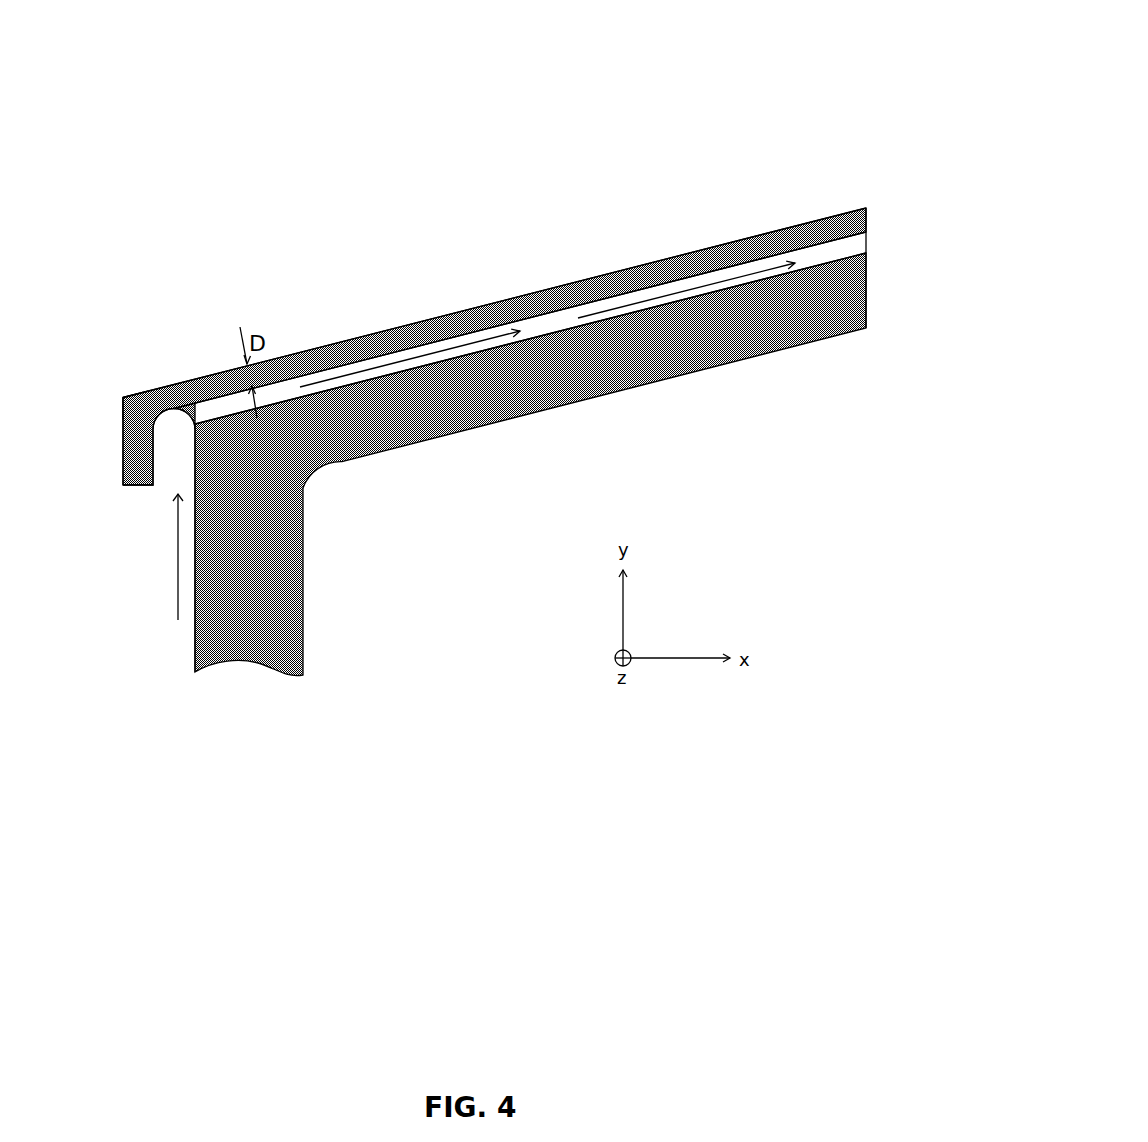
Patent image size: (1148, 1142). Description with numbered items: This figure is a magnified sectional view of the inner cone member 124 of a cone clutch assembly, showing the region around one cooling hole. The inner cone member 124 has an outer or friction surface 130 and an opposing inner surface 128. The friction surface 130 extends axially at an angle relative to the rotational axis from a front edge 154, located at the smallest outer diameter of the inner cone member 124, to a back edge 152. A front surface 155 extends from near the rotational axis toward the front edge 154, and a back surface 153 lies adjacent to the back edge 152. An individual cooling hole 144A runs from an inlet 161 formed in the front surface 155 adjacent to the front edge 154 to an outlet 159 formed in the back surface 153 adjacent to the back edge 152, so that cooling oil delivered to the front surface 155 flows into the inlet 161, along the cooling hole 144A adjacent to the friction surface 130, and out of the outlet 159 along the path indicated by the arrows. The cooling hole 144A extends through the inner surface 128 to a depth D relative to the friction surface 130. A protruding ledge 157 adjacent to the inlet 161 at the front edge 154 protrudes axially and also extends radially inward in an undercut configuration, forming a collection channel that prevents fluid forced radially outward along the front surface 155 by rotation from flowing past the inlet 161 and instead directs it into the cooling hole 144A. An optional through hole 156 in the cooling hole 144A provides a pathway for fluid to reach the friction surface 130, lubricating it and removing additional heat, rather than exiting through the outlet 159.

The inner cone member 124 is at (805, 57).
The inner surface 128 is at (765, 354).
The outer surface 130 is at (583, 281).
The cooling hole 144A is at (545, 318).
The back edge 152 is at (868, 211).
The back surface 153 is at (868, 276).
The front edge 154 is at (124, 395).
The front surface 155 is at (195, 642).
The through hole 156 is at (358, 338).
The protruding ledge 157 is at (136, 478).
The outlet 159 is at (868, 242).
The inlet 161 is at (186, 410).